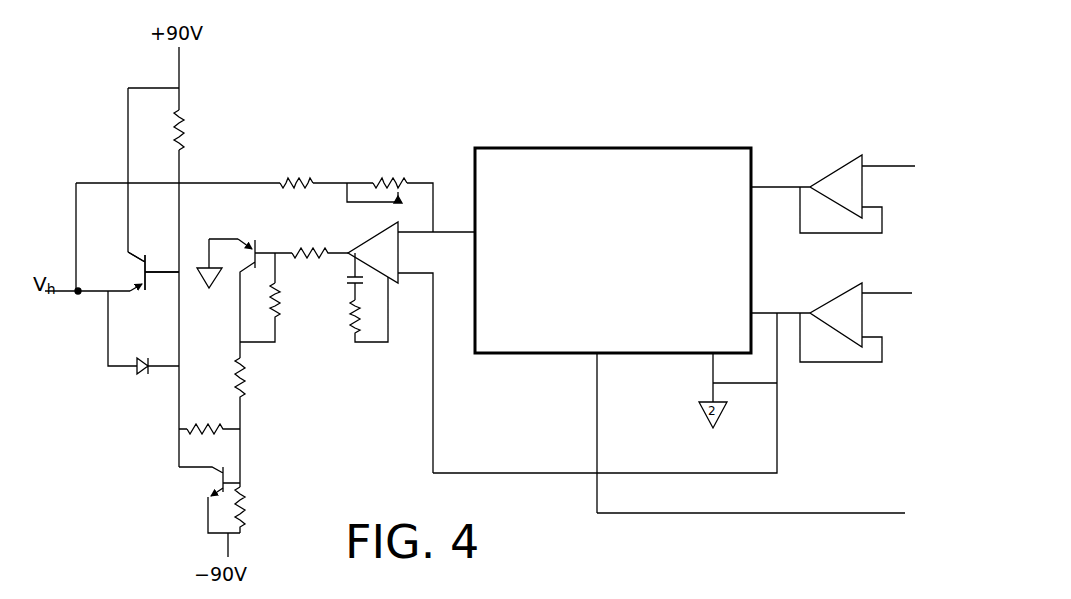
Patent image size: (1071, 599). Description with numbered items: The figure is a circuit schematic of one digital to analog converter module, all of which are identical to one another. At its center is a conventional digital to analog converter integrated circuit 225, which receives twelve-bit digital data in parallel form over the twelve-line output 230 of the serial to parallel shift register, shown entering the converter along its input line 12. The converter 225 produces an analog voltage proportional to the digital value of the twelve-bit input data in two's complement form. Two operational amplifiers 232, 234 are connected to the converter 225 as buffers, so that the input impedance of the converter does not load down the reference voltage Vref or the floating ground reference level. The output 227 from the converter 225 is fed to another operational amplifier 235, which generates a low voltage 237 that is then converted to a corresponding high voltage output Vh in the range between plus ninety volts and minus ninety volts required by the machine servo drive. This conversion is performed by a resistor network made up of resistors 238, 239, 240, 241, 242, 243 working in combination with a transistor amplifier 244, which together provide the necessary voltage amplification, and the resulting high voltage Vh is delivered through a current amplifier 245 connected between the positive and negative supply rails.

The line output 12 is at (594, 388).
The digital to analog converter integrated circuit 225 is at (706, 150).
The output 227 is at (461, 231).
The line output 230 is at (660, 513).
The operational amplifier 232 is at (832, 180).
The operational amplifier 234 is at (830, 310).
The operational amplifier 235 is at (378, 240).
The low voltage 237 is at (337, 262).
The resistor 238 is at (300, 246).
The resistor 239 is at (282, 310).
The resistor 240 is at (247, 372).
The resistor 241 is at (250, 505).
The resistor 242 is at (203, 428).
The resistor 243 is at (185, 133).
The transistor amplifier 244 is at (244, 241).
The current amplifier 245 is at (135, 277).